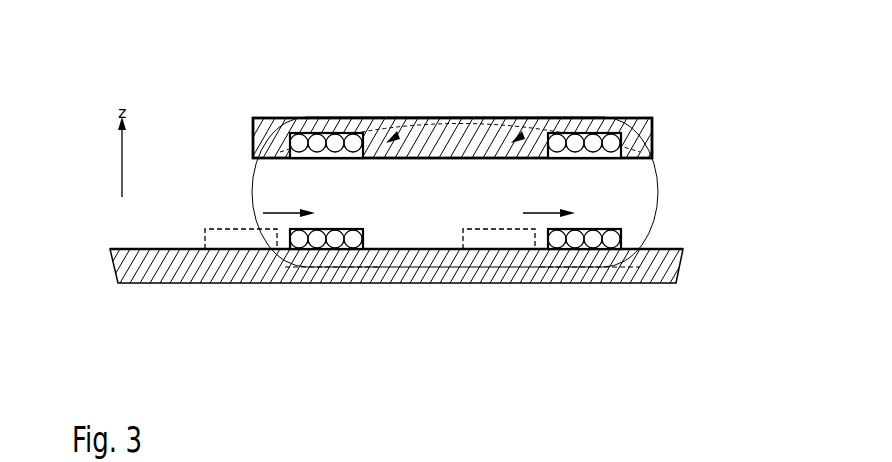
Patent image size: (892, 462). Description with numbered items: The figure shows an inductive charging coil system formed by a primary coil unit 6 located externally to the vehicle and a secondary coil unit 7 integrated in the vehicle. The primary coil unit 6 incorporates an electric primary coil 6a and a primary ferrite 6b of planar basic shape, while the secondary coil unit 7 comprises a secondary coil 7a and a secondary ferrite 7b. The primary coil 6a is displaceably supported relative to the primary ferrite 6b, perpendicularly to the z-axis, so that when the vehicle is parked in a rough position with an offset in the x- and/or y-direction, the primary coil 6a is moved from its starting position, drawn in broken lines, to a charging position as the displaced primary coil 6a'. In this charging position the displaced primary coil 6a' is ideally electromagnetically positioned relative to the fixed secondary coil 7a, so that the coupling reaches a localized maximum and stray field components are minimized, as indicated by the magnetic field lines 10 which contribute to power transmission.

The primary coil unit 6 is at (433, 273).
The primary coil 6a is at (370, 212).
The displaced primary coil 6a' is at (455, 212).
The primary ferrite 6b is at (722, 293).
The secondary coil unit 7 is at (450, 83).
The secondary coil 7a is at (326, 133).
The secondary ferrite 7b is at (457, 118).
The magnetic field lines 10 is at (658, 192).